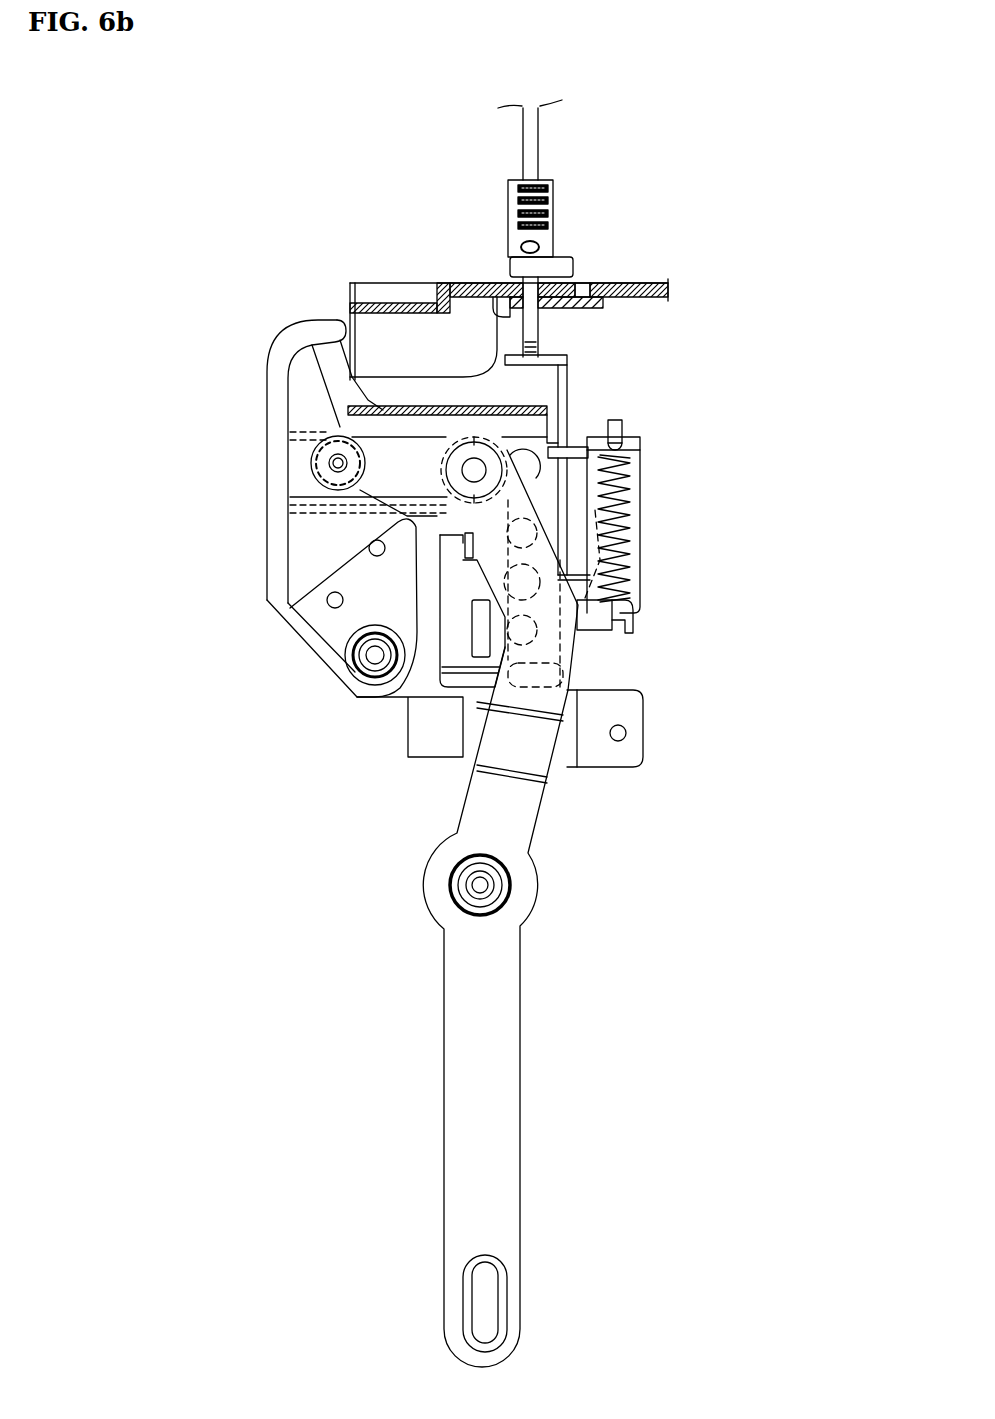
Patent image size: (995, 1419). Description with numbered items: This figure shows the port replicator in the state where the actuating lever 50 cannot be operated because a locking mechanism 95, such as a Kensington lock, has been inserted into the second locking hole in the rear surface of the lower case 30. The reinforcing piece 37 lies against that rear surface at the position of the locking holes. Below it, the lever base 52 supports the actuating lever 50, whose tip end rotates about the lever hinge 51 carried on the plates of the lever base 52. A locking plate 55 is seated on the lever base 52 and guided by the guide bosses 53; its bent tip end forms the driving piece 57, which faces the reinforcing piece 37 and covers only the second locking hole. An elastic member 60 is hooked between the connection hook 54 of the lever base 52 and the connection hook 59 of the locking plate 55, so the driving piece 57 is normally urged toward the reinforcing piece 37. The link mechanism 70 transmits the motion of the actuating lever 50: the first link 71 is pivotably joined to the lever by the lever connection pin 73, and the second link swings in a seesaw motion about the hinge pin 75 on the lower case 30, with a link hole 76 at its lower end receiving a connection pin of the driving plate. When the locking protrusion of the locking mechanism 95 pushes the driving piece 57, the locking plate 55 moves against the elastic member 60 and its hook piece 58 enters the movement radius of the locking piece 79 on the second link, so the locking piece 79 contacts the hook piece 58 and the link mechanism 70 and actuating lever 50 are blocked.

The lower case 30 is at (460, 283).
The reinforcing piece 37 is at (497, 316).
The locking mechanism 95 is at (553, 208).
The first link 71 is at (387, 453).
The driving piece 57 is at (552, 356).
The connection hook 54 is at (617, 420).
The lever connection pin 73 is at (320, 463).
The elastic member 60 is at (630, 497).
The actuating lever 50 is at (267, 520).
The guide bosses 53 is at (600, 545).
The hook piece 58 is at (410, 528).
The connection hook 59 is at (634, 613).
The locking piece 79 is at (462, 547).
The lever hinge 51 is at (360, 662).
The lever base 52 is at (672, 724).
The locking plate 55 is at (467, 688).
The hinge pin 75 is at (484, 885).
The link mechanism 70 is at (560, 1062).
The link hole 76 is at (484, 1305).